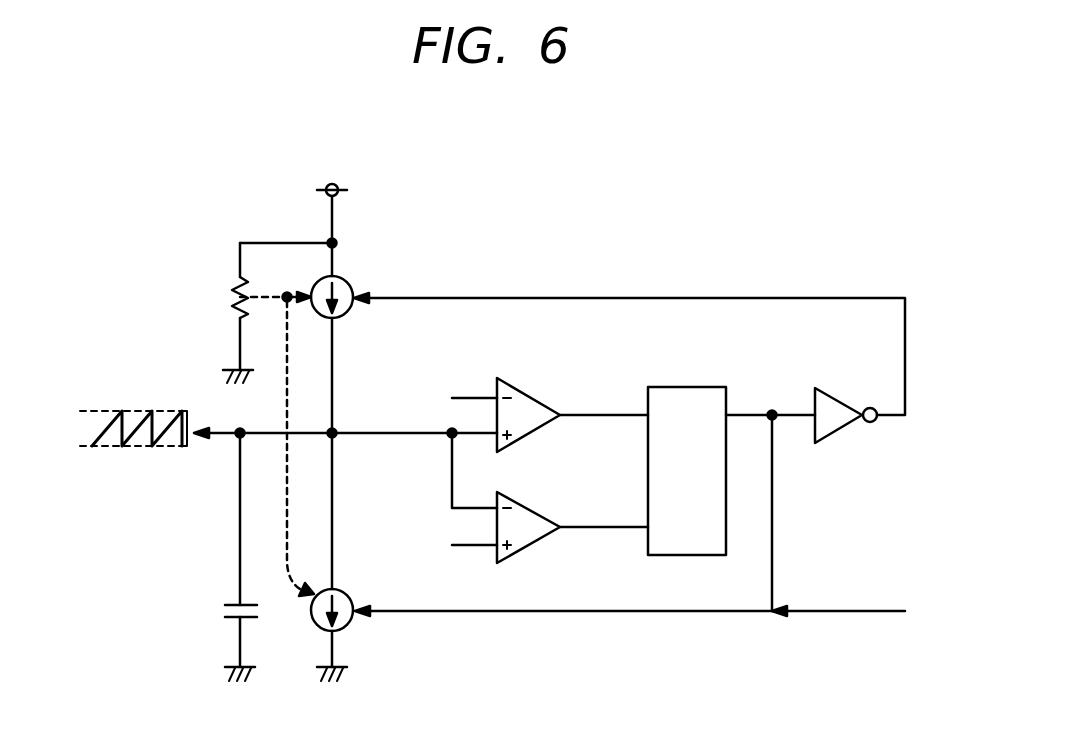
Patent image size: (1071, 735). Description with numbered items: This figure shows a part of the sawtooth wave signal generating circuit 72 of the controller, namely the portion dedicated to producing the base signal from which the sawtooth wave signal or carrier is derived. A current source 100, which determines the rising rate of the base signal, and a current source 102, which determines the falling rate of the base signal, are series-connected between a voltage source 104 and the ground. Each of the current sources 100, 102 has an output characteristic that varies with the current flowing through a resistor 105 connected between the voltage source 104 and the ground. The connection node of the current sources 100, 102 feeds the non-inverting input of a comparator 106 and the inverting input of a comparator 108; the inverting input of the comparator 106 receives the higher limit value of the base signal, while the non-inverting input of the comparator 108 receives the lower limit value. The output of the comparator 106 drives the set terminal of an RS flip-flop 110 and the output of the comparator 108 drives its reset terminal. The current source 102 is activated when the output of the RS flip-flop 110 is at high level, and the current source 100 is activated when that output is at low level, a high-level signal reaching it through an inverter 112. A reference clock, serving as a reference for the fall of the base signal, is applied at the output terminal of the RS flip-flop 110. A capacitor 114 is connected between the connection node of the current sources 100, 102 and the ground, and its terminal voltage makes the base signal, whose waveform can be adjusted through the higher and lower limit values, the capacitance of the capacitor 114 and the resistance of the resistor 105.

The sawtooth wave signal generating circuit 72 is at (868, 224).
The current source 100 is at (346, 282).
The current source 102 is at (346, 594).
The voltage source 104 is at (333, 183).
The resistor 105 is at (237, 276).
The comparator 106 is at (534, 436).
The comparator 108 is at (534, 547).
The RS flip-flop 110 is at (676, 386).
The inverter 112 is at (843, 433).
The capacitor 114 is at (237, 604).